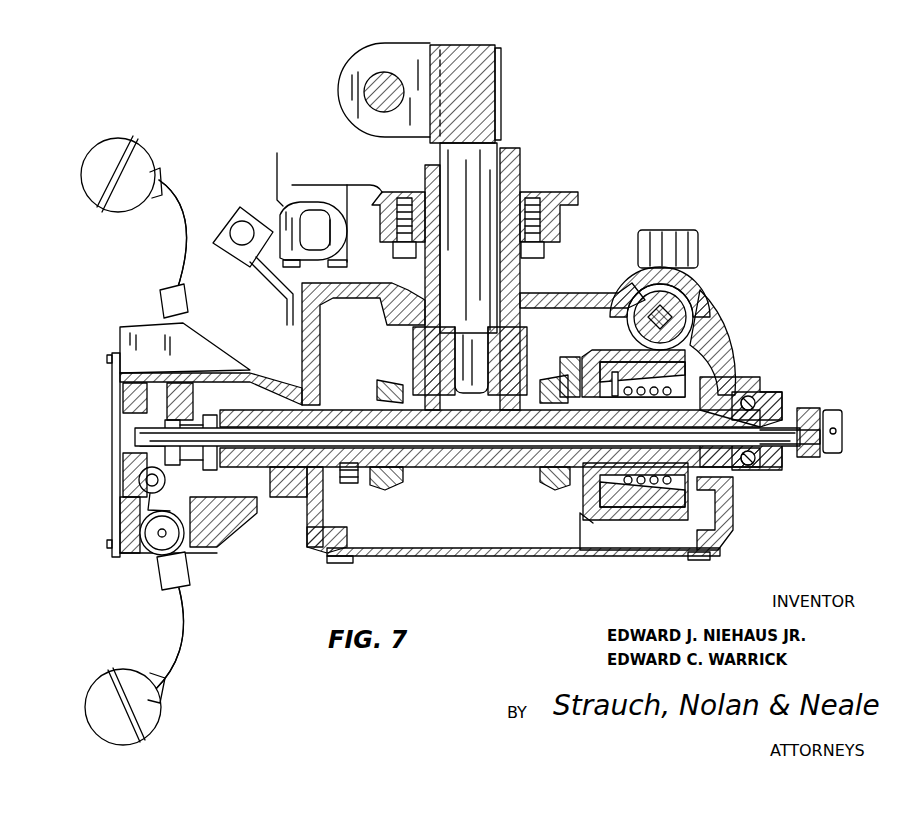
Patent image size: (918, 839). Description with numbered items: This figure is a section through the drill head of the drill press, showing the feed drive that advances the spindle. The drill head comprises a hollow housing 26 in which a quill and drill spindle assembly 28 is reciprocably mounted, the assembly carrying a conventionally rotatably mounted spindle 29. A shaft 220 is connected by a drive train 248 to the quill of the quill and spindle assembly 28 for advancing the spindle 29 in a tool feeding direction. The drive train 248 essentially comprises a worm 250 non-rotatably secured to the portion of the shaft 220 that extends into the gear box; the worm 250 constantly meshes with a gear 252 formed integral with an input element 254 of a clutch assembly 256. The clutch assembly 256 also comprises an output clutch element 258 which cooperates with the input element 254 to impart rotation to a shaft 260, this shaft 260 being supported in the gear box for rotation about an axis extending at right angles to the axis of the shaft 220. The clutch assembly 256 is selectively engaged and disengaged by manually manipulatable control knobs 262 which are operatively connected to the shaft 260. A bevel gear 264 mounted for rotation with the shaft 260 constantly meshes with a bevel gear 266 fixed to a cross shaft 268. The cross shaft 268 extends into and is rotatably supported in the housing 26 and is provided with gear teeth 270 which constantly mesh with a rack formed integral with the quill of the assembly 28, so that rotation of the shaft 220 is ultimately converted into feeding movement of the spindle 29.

The hollow housing 26 is at (578, 193).
The quill and drill spindle assembly 28 is at (352, 63).
The spindle 29 is at (384, 72).
The shaft 220 is at (668, 313).
The drive train 248 is at (601, 335).
The worm 250 is at (693, 318).
The gear 252 is at (693, 357).
The input element 254 is at (687, 372).
The clutch assembly 256 is at (664, 528).
The output clutch element 258 is at (573, 510).
The shaft 260 is at (483, 462).
The control knobs 262 is at (170, 217).
The bevel gear 264 is at (383, 480).
The bevel gear 266 is at (520, 387).
The cross shaft 268 is at (480, 183).
The gear teeth 270 is at (501, 92).